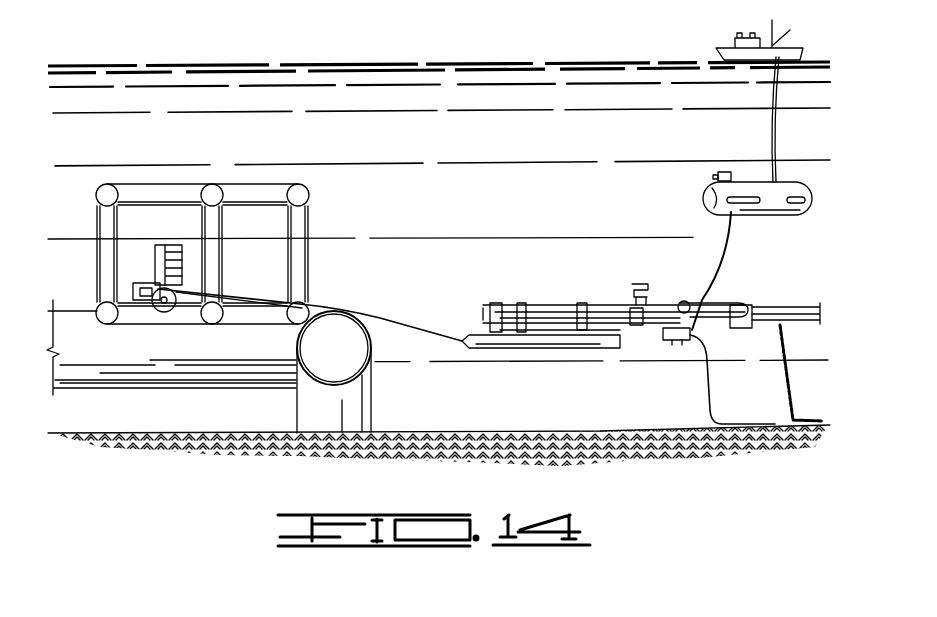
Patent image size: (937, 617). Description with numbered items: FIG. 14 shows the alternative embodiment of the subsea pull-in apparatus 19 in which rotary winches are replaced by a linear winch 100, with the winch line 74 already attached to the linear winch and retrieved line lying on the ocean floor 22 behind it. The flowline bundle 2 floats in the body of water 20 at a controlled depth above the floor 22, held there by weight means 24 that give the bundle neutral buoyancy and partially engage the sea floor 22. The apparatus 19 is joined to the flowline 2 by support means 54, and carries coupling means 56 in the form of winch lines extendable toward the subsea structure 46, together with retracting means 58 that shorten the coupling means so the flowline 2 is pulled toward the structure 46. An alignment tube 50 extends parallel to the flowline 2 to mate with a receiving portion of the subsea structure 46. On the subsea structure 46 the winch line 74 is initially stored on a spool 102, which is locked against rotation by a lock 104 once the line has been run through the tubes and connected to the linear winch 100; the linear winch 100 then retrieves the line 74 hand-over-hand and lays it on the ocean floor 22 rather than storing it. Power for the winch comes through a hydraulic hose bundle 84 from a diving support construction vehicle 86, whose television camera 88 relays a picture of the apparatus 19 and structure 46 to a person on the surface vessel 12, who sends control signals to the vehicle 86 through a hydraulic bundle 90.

The flowline bundle 2 is at (786, 314).
The trailing vessel 12 is at (748, 62).
The subsea pull-in apparatus 19 is at (693, 300).
The body of water 20 is at (530, 92).
The floor of the body of water 22 is at (453, 432).
The weight means 24 is at (790, 380).
The subsea structure 46 is at (318, 202).
The alignment tube 50 is at (478, 342).
The support means 54 is at (722, 297).
The coupling means 56 is at (640, 335).
The retracting means 58 is at (680, 348).
The winch line 74 is at (392, 322).
The hydraulic hose bundle 84 is at (730, 247).
The diving support construction vehicle 86 is at (800, 182).
The television camera 88 is at (722, 171).
The hydraulic bundle 90 is at (774, 121).
The linear winch 100 is at (673, 340).
The spool 102 is at (160, 312).
The lock 104 is at (156, 288).